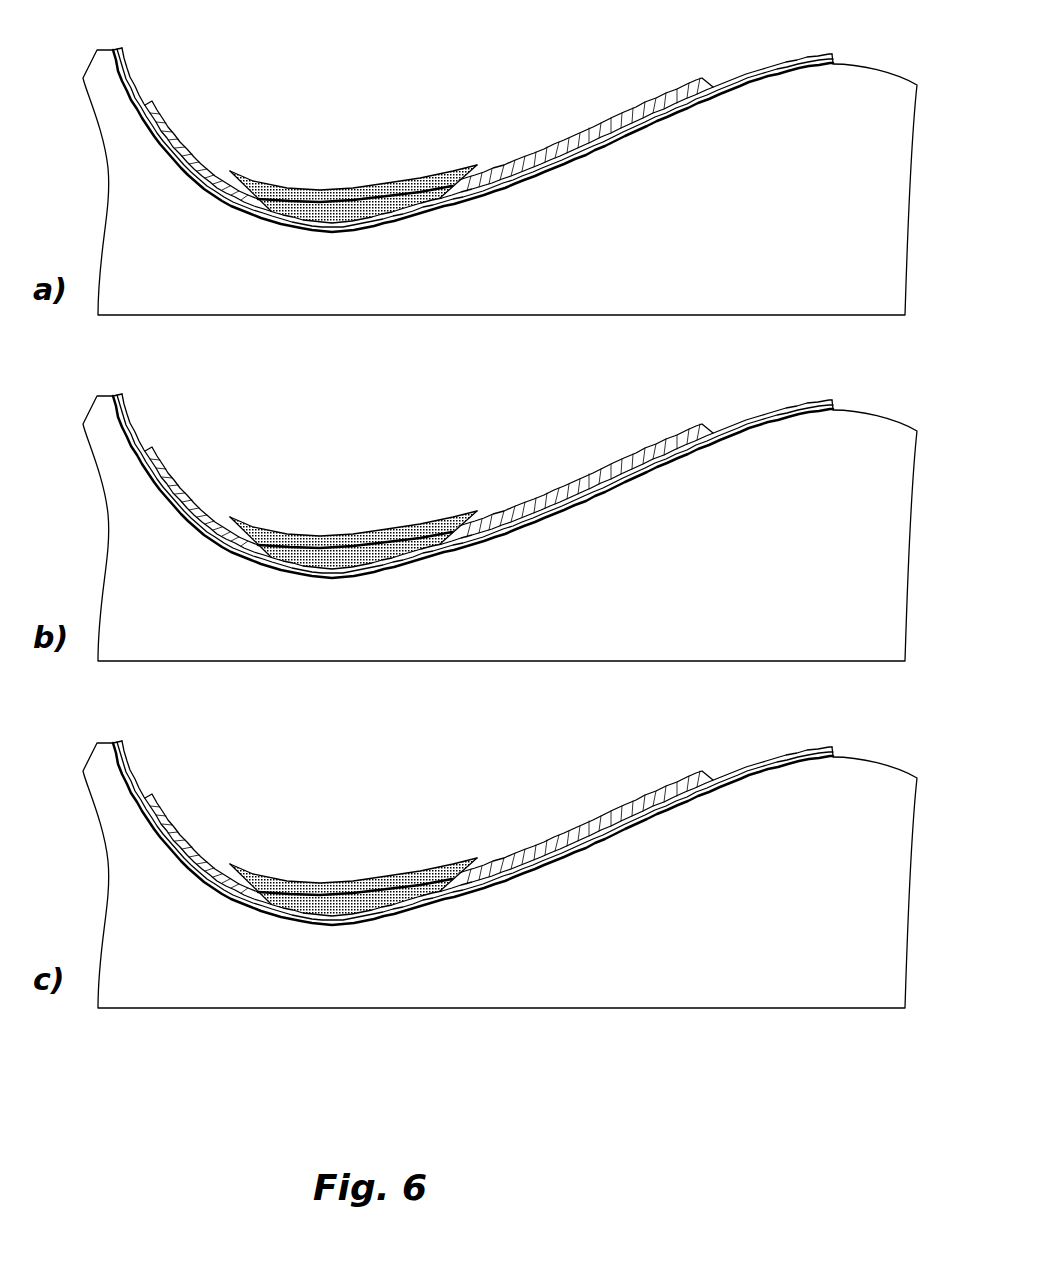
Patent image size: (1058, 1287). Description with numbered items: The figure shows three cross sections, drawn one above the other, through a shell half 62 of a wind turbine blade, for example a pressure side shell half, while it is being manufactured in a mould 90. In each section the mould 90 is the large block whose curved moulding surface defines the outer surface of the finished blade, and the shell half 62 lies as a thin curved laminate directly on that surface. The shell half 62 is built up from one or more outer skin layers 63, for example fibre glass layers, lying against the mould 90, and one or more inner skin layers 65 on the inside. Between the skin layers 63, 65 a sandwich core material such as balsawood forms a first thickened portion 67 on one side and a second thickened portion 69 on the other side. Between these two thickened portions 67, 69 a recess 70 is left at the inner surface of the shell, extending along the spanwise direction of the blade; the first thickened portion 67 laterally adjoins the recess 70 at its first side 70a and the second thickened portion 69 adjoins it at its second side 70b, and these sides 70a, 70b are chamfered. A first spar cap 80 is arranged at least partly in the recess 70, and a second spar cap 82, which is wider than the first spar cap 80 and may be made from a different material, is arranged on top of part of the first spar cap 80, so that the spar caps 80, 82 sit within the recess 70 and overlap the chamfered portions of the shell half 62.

The shell half 62 is at (211, 68).
The outer skin layers 63 is at (568, 163).
The inner skin layers 65 is at (580, 130).
The first thickened portion 67 is at (182, 153).
The second thickened portion 69 is at (655, 107).
The recess 70 is at (343, 219).
The first side of the recess 70a is at (259, 196).
The second side of the recess 70b is at (440, 193).
The first spar cap 80 is at (392, 200).
The second spar cap 82 is at (353, 188).
The mould 90 is at (408, 288).